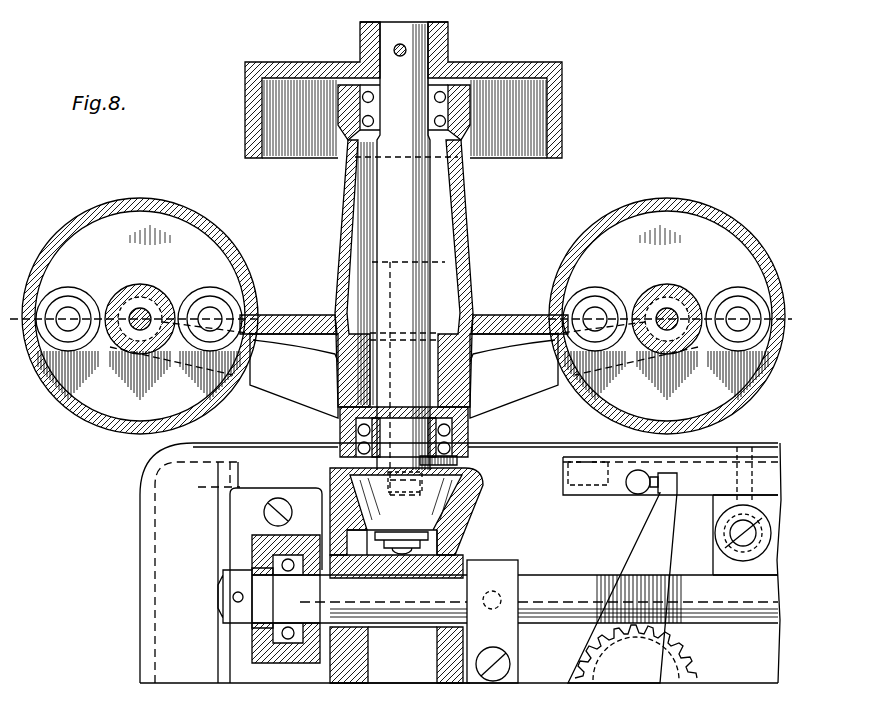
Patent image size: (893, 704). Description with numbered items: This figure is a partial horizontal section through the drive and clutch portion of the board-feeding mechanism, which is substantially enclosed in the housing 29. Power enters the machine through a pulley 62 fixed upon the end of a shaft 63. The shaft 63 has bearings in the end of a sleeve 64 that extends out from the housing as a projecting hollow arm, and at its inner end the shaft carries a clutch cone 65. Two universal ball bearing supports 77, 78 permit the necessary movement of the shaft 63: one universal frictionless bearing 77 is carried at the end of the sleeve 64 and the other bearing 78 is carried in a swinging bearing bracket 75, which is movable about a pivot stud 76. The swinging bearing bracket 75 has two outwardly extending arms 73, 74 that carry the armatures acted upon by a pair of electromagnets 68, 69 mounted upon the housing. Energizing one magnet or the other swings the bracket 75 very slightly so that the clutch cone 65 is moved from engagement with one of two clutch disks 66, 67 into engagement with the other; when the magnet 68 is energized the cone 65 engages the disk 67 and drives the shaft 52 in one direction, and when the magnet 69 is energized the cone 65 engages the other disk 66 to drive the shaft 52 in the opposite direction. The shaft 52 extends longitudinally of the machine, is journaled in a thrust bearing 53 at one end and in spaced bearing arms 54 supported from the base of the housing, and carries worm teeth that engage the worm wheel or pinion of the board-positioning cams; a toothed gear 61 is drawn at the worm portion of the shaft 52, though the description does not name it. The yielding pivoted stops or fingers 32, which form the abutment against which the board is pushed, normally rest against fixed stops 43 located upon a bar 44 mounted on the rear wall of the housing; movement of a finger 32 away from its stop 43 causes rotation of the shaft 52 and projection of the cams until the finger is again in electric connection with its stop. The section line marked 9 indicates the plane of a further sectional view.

The shaft 63 is at (436, 50).
The pulley 62 is at (562, 108).
The universal ball bearing support 77 is at (463, 150).
The sleeve 64 is at (470, 122).
The swinging bearing bracket 75 is at (472, 300).
The outwardly extending arm 73 is at (508, 350).
The outwardly extending arm 74 is at (258, 358).
The pivot stud 76 is at (375, 288).
The universal ball bearing support 78 is at (470, 435).
The electromagnet 69 is at (148, 232).
The electromagnet 68 is at (700, 238).
The section line 9- 9 is at (794, 327).
The housing 29 is at (138, 606).
The bar 44 is at (732, 447).
The clutch disk 66 is at (468, 498).
The clutch cone 65 is at (332, 476).
The clutch disk 67 is at (358, 518).
The thrust bearing 53 is at (252, 640).
The shaft 52 is at (553, 584).
The bearing arm 54 is at (512, 563).
The yielding pivoted stop or finger 32 is at (668, 538).
The fixed stop 43 is at (632, 495).
The gear 61 is at (695, 666).